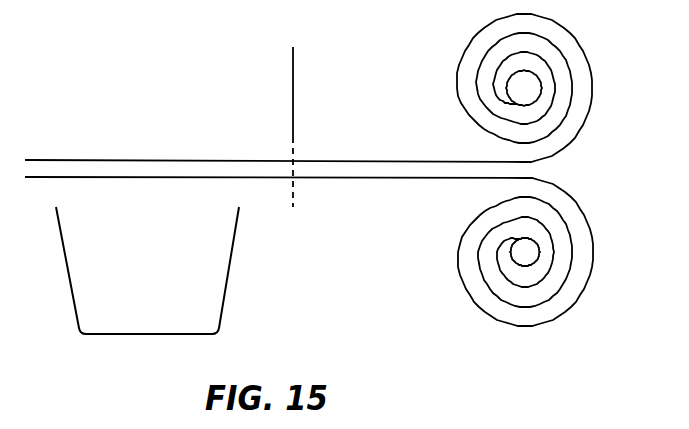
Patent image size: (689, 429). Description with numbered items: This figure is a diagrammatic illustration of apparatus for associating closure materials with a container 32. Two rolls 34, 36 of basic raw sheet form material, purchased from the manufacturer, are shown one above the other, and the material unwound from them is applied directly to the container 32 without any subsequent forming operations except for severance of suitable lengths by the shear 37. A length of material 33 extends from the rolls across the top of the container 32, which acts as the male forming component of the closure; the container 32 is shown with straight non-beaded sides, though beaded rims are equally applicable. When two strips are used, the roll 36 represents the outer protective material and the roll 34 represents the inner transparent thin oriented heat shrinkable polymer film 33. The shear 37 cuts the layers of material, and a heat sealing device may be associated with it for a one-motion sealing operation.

The container 32 is at (232, 258).
The length of material 33 is at (218, 136).
The roll 34 is at (592, 272).
The roll 36 is at (592, 70).
The shear 37 is at (294, 83).